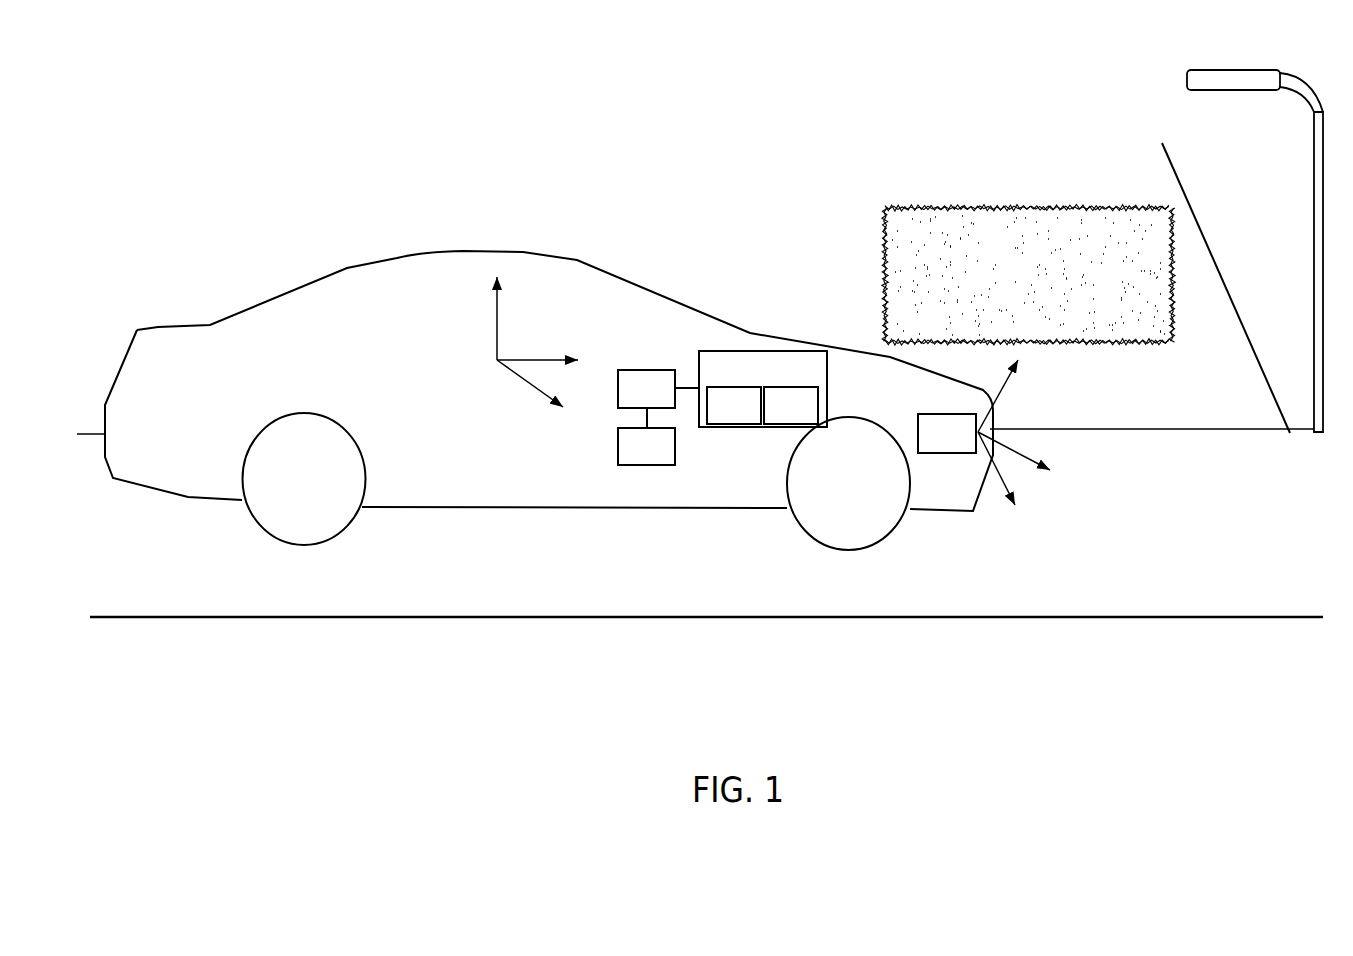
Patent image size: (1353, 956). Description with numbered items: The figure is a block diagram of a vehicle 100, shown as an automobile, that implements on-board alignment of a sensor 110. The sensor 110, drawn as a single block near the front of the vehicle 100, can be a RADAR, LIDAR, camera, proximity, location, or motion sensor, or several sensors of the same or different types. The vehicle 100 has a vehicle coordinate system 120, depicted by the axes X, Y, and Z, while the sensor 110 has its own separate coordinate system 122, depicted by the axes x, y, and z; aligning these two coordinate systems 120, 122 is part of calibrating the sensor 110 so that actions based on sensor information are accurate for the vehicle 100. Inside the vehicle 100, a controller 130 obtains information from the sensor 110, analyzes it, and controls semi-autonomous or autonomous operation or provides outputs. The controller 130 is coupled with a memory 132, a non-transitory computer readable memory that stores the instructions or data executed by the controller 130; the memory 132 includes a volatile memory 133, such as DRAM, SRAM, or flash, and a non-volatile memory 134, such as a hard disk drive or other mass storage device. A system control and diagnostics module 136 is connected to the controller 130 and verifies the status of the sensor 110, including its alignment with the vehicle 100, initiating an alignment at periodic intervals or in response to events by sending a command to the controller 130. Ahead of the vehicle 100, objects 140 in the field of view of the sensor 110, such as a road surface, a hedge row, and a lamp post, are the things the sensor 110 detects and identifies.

The vehicle 100 is at (158, 328).
The sensor 110 is at (947, 433).
The vehicle coordinate system 120 is at (510, 328).
The sensor coordinate system 122 is at (1017, 392).
The controller 130 is at (658, 399).
The memory 132 is at (763, 389).
The volatile memory 133 is at (734, 405).
The non-volatile memory 134 is at (791, 405).
The system control and diagnostics module 136 is at (646, 446).
The objects 140 is at (1090, 210).